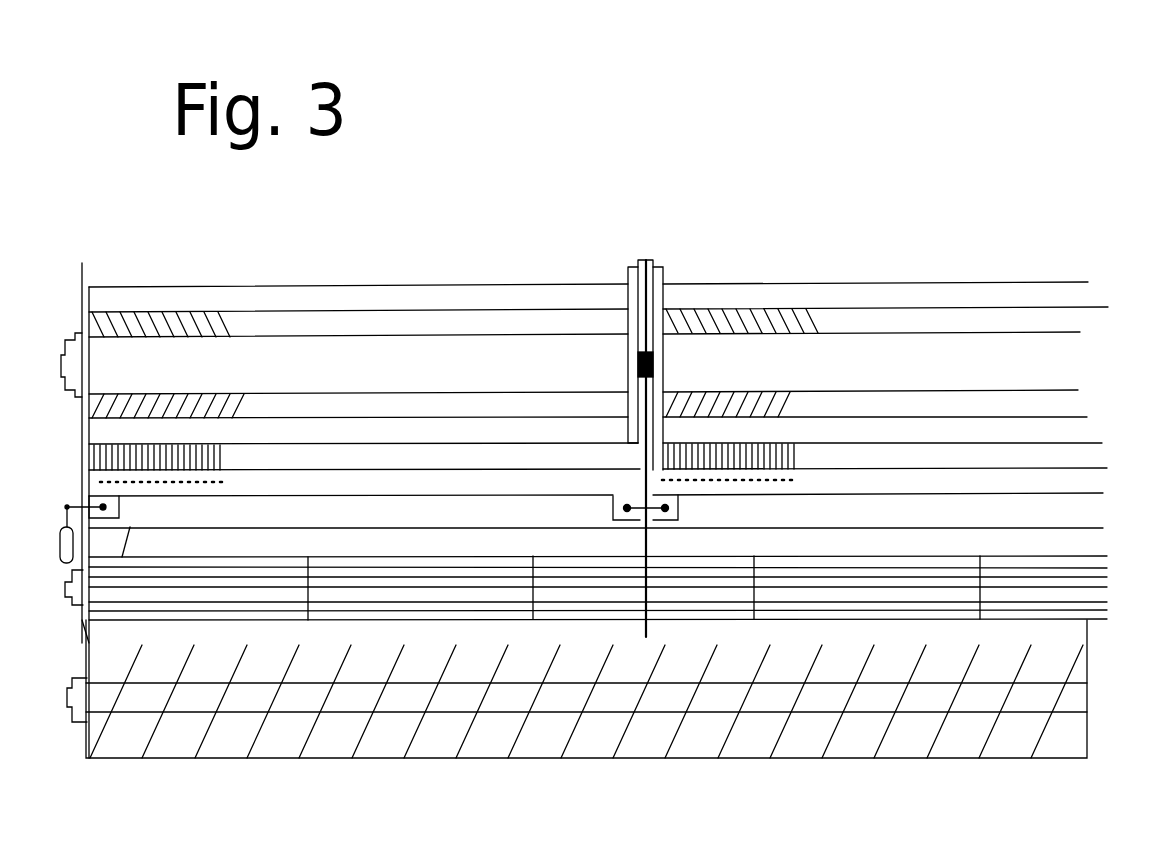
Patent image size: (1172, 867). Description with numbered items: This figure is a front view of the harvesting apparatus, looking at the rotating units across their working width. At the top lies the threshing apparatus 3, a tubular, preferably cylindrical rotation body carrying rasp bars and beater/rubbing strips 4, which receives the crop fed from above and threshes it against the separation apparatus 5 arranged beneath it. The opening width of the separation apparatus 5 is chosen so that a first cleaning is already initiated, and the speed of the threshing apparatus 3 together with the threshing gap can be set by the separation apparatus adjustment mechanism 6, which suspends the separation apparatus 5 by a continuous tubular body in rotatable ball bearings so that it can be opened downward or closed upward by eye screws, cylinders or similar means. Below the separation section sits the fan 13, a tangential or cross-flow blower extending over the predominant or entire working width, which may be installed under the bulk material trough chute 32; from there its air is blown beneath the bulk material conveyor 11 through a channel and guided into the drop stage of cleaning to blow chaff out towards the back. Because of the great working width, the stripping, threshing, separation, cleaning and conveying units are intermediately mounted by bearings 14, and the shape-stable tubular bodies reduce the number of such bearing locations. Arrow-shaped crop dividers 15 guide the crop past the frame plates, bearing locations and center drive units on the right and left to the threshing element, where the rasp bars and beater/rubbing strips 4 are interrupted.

The threshing apparatus 3 is at (407, 368).
The rasp bars, beater/rubbing strips 4 is at (238, 328).
The separation apparatus 5 is at (232, 482).
The separation apparatus adjustment mechanism 6 is at (67, 507).
The bulk material conveyor 11 is at (593, 743).
The fan 13 is at (427, 590).
The bearings 14 is at (635, 374).
The crop dividers 15 is at (650, 278).
The bulk material trough chute 32 is at (788, 542).